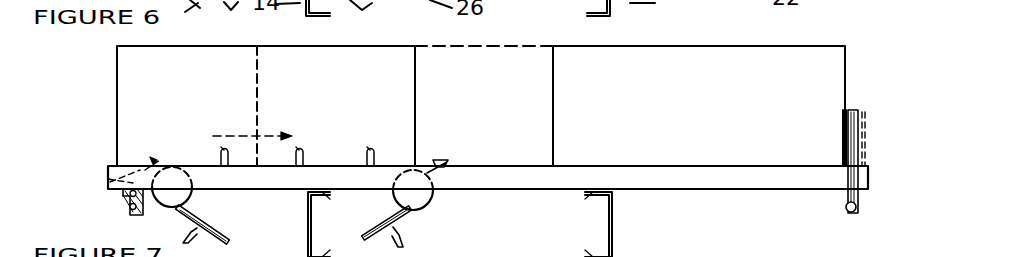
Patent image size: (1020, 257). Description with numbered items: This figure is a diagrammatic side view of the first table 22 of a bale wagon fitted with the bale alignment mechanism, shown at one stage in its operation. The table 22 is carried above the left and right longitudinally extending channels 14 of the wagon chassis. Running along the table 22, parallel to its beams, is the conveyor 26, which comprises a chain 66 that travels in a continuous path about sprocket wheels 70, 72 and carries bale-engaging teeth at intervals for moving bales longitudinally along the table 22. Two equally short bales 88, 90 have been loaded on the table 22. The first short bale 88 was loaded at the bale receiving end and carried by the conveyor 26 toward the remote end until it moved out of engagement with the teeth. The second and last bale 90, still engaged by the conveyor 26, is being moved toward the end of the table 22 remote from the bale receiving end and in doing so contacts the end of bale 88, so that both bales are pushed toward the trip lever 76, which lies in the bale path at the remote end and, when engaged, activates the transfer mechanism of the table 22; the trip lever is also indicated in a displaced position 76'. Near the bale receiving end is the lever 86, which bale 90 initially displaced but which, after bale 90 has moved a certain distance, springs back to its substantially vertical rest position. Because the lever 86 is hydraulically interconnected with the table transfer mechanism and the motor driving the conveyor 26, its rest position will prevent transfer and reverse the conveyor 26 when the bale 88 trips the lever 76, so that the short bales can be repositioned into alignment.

The channel 14 is at (305, 236).
The first table 22 is at (763, 190).
The conveyor 26 is at (402, 225).
The chain 66 is at (375, 230).
The sprocket wheel 70 is at (195, 198).
The sprocket wheel 72 is at (433, 195).
The trip lever 76 is at (865, 130).
The pin (alternate position) 76' is at (889, 124).
The lever 86 is at (133, 183).
The first short bale 88 is at (553, 112).
The last bale 90 is at (117, 110).